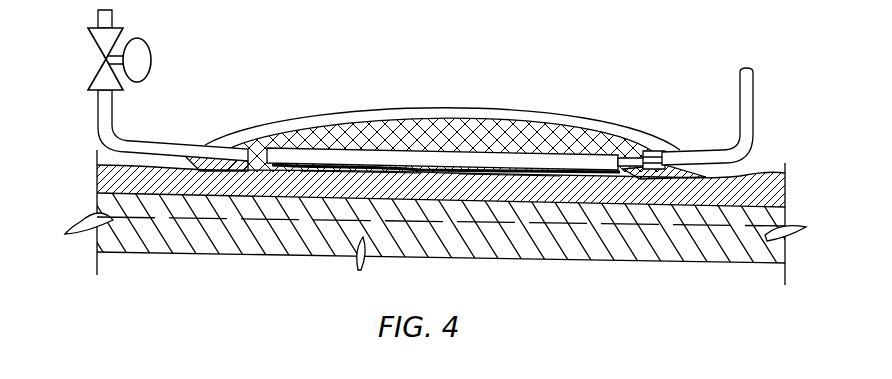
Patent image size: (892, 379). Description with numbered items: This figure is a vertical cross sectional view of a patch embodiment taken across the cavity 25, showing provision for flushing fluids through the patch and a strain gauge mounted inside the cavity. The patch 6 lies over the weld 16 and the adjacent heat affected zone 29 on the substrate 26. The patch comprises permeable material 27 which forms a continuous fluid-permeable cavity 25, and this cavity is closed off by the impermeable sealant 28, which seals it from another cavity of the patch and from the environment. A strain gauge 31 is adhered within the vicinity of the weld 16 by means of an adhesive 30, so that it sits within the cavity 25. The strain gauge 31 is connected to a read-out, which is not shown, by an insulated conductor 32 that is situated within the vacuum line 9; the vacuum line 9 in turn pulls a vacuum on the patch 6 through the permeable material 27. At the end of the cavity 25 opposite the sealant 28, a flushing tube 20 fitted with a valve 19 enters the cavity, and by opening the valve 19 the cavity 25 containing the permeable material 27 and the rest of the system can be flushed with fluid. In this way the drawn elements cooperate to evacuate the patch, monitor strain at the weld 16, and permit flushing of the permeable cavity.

The patch 6 is at (442, 114).
The vacuum line 9 is at (745, 102).
The weld 16 is at (108, 180).
The valve 19 is at (143, 68).
The flushing tube 20 is at (112, 19).
The cavity 25 is at (503, 132).
The substrate 26 is at (683, 248).
The permeable material 27 is at (372, 122).
The impermeable sealant 28 is at (293, 126).
The heat affected zone 29 is at (278, 219).
The adhesive 30 is at (541, 176).
The strain gauge 31 is at (537, 160).
The insulated conductor 32 is at (630, 160).